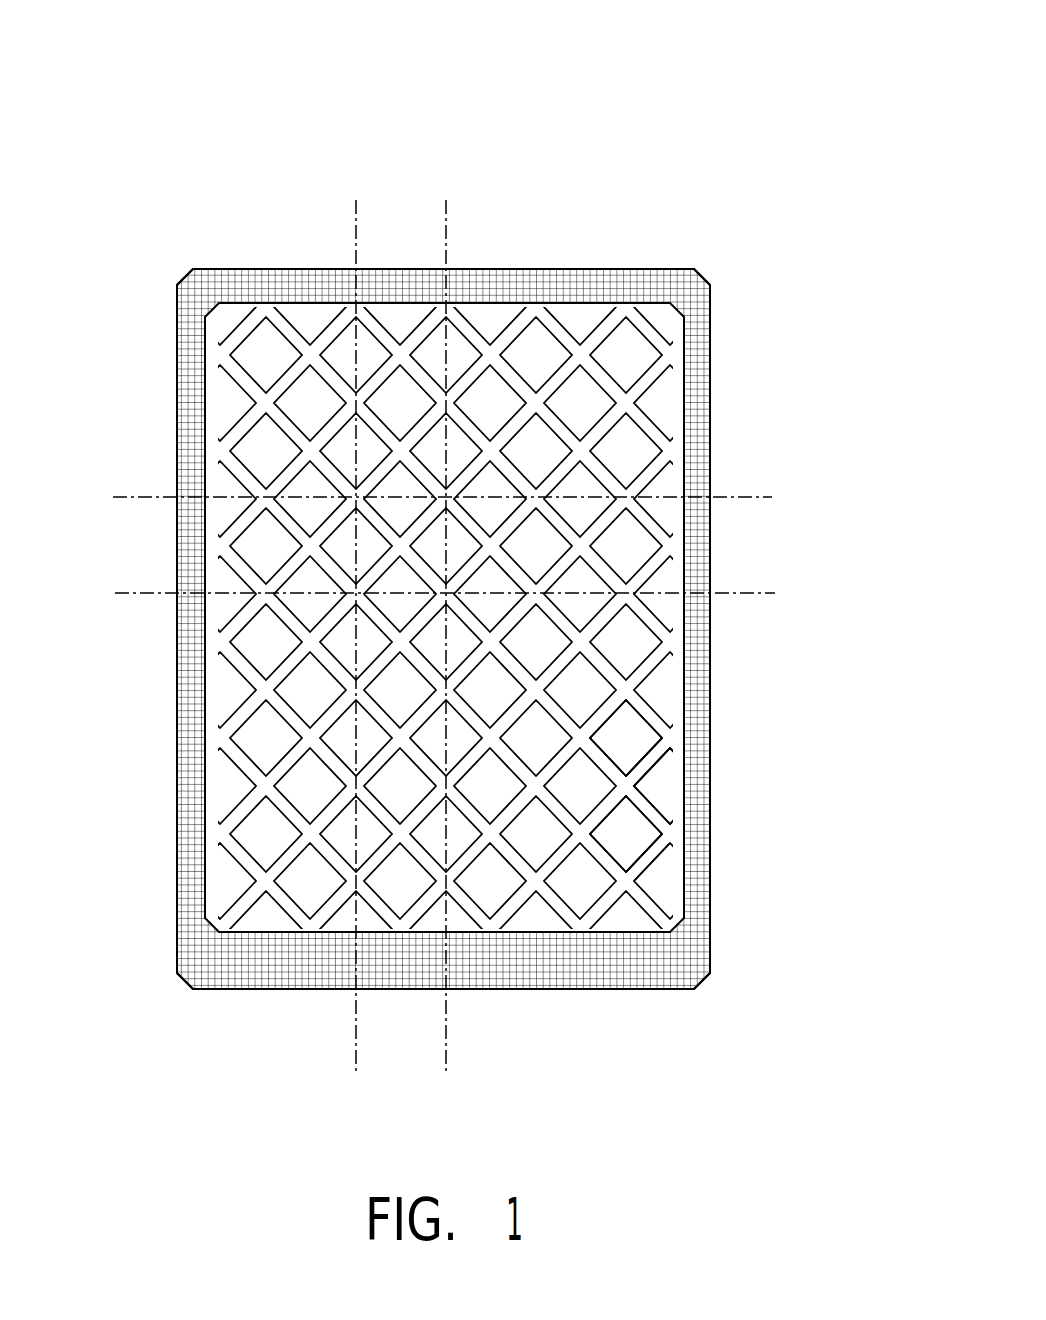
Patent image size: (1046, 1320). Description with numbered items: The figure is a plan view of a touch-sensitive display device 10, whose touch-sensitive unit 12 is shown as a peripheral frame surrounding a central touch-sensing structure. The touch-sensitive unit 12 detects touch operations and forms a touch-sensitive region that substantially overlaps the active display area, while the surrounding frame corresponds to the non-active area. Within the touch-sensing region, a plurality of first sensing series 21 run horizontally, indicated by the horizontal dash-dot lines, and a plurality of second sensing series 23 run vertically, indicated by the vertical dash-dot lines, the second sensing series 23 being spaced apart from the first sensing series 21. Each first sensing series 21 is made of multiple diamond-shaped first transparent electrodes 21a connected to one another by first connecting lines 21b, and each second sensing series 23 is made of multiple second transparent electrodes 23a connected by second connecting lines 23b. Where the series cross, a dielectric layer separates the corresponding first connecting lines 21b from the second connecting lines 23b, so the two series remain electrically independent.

The touch-sensitive display device 10 is at (83, 25).
The touch-sensitive unit 12 is at (517, 270).
The first sensing series 21 is at (730, 497).
The first transparent electrode 21a is at (665, 788).
The first connecting line 21b is at (633, 783).
The second sensing series 23 is at (356, 213).
The second transparent electrode 23a is at (640, 735).
The second connecting line 23b is at (628, 880).